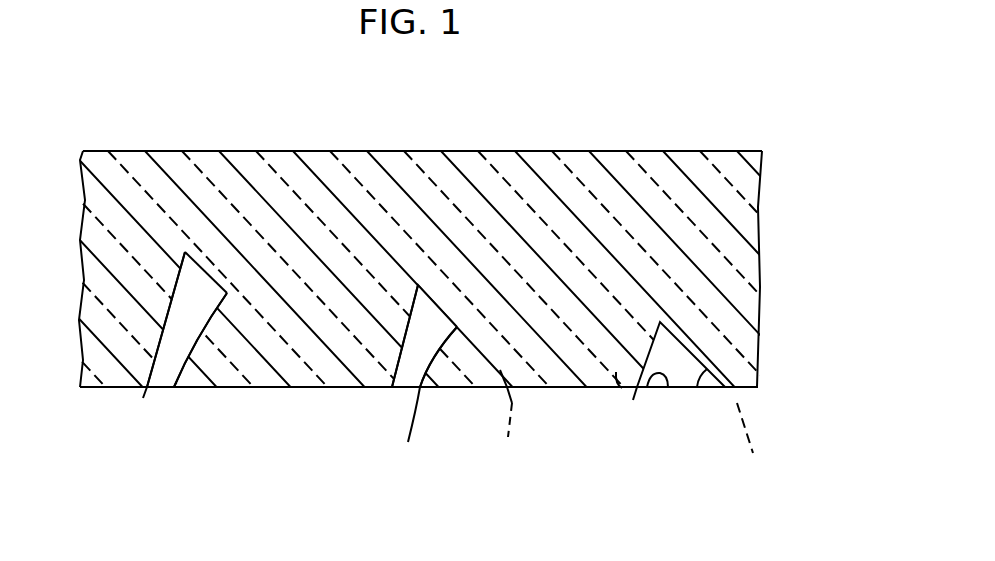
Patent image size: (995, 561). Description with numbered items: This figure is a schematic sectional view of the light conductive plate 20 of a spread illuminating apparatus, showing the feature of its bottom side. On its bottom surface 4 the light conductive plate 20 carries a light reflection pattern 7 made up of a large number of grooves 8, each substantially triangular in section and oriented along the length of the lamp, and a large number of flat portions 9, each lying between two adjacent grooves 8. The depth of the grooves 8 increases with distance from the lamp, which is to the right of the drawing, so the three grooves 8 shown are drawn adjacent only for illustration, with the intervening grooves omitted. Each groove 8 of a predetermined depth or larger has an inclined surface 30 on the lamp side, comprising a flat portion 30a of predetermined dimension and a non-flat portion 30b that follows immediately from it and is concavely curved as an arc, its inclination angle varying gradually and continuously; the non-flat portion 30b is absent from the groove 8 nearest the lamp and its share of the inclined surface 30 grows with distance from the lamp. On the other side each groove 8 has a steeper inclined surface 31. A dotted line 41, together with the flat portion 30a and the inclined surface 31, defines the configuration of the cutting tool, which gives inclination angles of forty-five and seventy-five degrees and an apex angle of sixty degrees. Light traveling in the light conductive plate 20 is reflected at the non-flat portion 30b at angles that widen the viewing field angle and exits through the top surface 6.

The bottom surface 4 is at (90, 387).
The top surface 6 is at (657, 152).
The light reflection pattern 7 is at (338, 401).
The groove 8 is at (682, 363).
The flat portion 9 is at (537, 387).
The light conductive plate 20 is at (513, 178).
The inclined surface 30 is at (298, 466).
The flat portion 30a is at (174, 387).
The non-flat portion 30b is at (260, 387).
The inclined surface 31 is at (633, 400).
The dotted line 41 is at (743, 408).